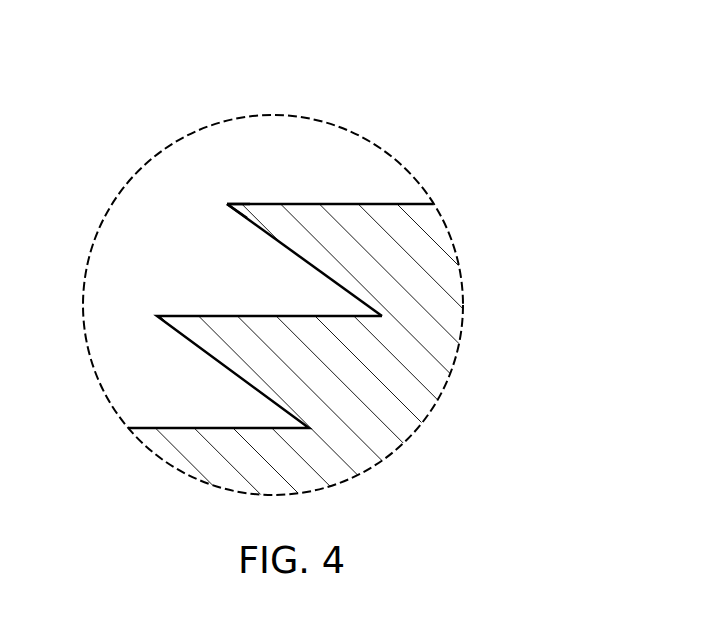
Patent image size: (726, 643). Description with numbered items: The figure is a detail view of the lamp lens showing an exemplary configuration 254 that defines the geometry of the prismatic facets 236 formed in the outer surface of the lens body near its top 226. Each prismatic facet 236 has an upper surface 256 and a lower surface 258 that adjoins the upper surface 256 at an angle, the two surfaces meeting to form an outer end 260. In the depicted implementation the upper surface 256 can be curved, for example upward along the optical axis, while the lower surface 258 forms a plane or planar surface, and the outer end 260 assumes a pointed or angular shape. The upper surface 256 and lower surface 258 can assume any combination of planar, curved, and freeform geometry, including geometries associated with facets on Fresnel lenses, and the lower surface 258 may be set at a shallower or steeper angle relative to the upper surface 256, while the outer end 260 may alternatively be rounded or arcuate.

The exemplary configuration 254 is at (441, 82).
The top 226 is at (343, 203).
The prismatic facets 236 is at (408, 273).
The upper surface 256 is at (283, 192).
The lower surface 258 is at (243, 230).
The outer end 260 is at (222, 203).